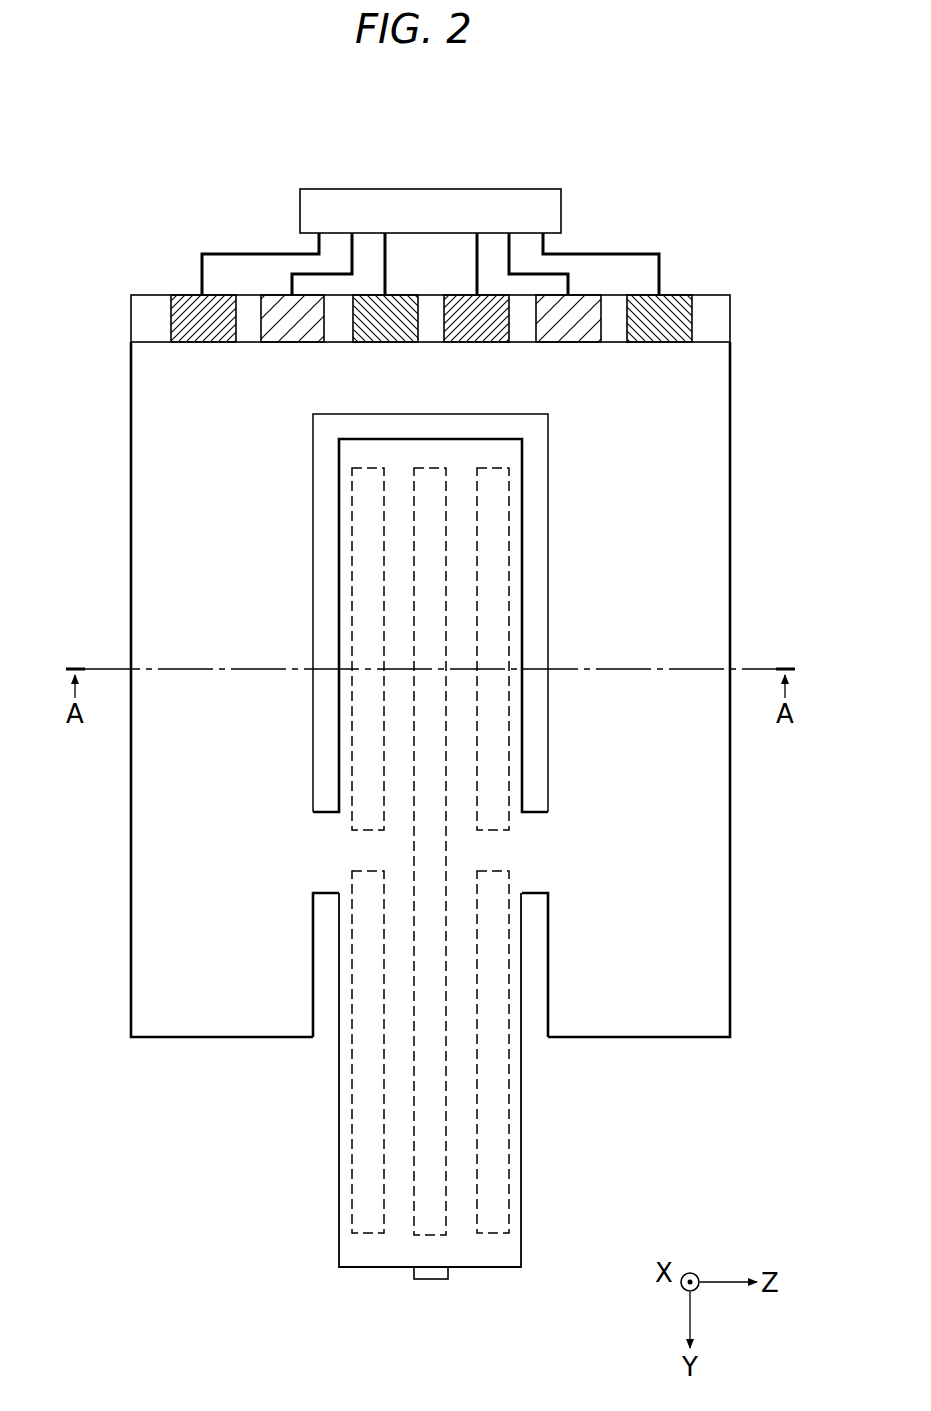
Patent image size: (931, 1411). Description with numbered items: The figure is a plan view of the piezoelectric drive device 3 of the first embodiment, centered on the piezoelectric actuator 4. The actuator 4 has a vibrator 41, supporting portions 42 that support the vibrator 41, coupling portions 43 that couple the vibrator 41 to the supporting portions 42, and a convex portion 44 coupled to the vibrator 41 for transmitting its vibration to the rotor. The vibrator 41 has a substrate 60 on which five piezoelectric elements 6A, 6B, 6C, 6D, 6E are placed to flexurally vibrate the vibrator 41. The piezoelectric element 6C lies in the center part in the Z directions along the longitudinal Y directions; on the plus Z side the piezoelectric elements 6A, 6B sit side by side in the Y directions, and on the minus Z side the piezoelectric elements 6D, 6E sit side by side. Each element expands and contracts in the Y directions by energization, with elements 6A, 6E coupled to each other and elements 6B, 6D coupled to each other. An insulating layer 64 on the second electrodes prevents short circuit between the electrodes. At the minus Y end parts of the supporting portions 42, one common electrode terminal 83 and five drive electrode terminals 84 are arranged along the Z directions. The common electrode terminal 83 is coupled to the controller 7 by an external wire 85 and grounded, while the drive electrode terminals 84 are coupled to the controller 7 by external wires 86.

The vibrator device 3 is at (778, 164).
The piezoelectric actuator 4 is at (731, 316).
The controller 7 is at (434, 188).
The piezoelectric element 6A is at (500, 1085).
The piezoelectric element 6B is at (500, 558).
The piezoelectric element 6C is at (430, 1137).
The piezoelectric element 6D is at (360, 1085).
The piezoelectric element 6E is at (360, 558).
The vibrator 41 is at (521, 1157).
The supporting portion 42 is at (148, 598).
The coupling portion 43 is at (327, 882).
The convex portion 44 is at (431, 1283).
The substrate 60 is at (429, 916).
The insulating layer 64 is at (429, 781).
The common electrode terminal 83 is at (592, 307).
The drive electrode terminal 84 is at (275, 305).
The external wire 85 is at (528, 272).
The external wire 86 is at (310, 270).